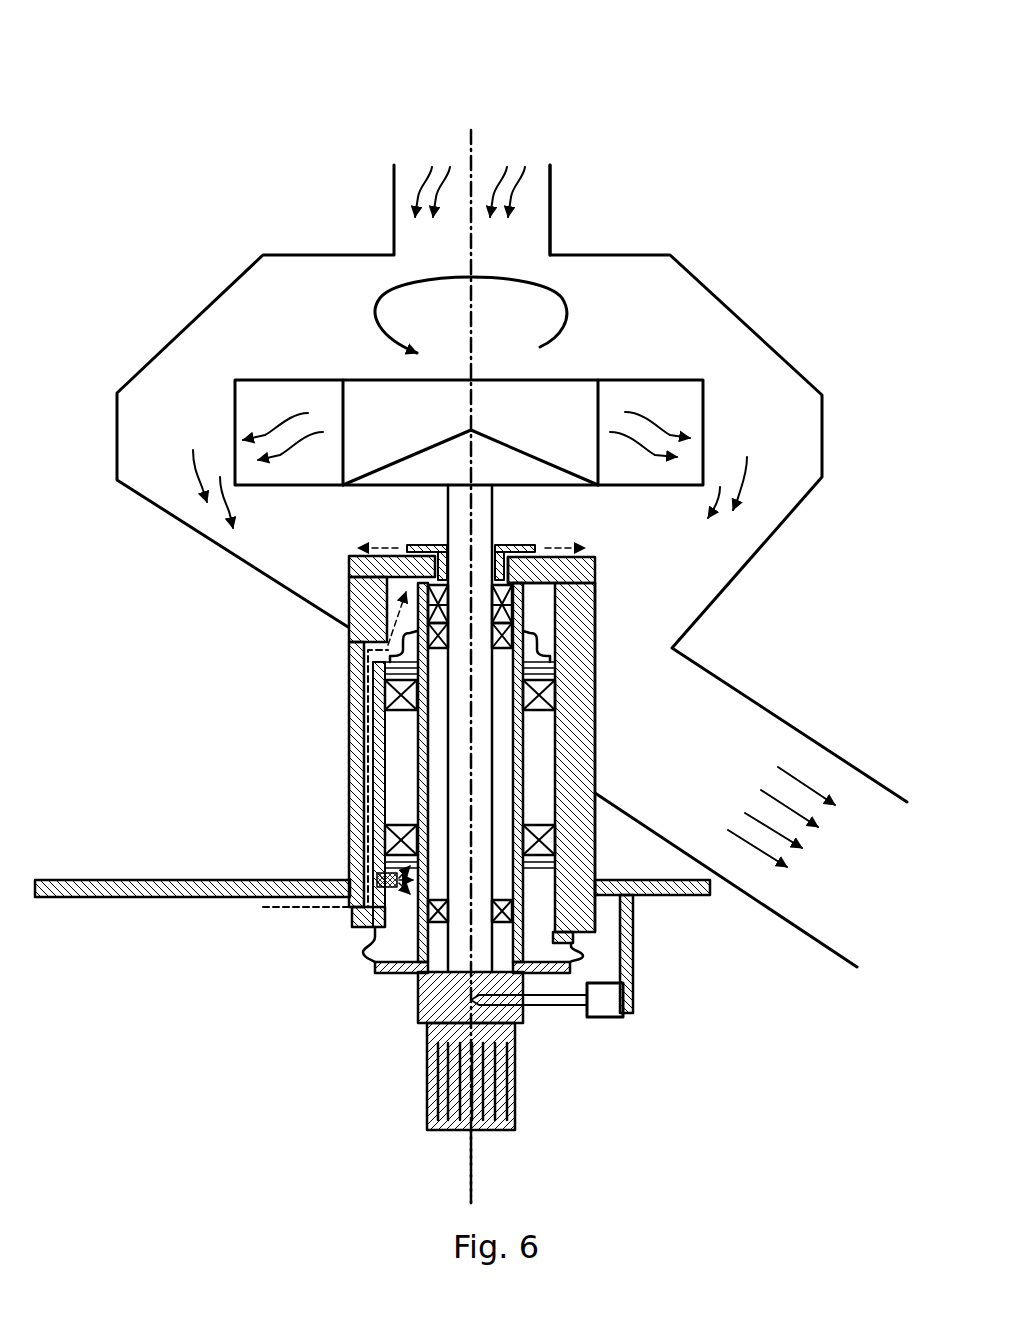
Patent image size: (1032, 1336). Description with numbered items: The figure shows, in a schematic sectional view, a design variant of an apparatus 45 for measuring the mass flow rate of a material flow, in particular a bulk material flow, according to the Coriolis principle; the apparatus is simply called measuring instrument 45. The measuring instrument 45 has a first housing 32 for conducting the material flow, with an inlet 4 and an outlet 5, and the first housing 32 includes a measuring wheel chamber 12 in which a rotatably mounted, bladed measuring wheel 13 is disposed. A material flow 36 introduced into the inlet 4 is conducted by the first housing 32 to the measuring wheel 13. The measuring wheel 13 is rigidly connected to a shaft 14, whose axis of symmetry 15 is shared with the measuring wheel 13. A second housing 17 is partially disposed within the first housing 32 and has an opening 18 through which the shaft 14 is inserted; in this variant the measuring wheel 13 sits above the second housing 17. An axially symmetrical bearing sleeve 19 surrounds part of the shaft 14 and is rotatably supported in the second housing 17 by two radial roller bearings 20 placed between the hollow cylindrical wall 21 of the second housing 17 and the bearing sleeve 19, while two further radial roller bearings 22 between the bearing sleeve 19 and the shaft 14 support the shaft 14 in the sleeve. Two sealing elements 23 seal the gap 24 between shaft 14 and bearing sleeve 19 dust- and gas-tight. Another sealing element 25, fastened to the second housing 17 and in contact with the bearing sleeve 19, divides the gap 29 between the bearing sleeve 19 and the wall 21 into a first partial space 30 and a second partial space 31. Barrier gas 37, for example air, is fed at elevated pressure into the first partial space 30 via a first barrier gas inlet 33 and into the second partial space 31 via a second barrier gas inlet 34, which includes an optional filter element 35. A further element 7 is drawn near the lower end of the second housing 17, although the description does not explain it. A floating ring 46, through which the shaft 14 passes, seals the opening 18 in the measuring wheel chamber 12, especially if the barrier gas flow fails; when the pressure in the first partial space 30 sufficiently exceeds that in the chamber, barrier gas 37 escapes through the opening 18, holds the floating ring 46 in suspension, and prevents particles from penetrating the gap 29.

The apparatus for measuring a mass flow rate 45 is at (511, 483).
The inlet 4 is at (550, 187).
The material flow 36 is at (430, 180).
The first housing 32 is at (217, 298).
The measuring wheel chamber 12 is at (685, 296).
The measuring wheel 13 is at (572, 378).
The floating ring 46 is at (430, 545).
The first partial space 30 is at (400, 583).
The opening 18 is at (502, 560).
The sealing elements 23 is at (545, 598).
The sealing element 25 is at (545, 655).
The first barrier gas inlet 33 is at (382, 614).
The wall 21 is at (365, 705).
The second housing 17 is at (350, 720).
The shaft 14 is at (560, 728).
The bearings 22 is at (442, 650).
The bearing sleeve 19 is at (565, 757).
The gap 29 is at (560, 793).
The bearings 20 is at (388, 832).
The outlet 5 is at (755, 697).
The second barrier gas inlet 34 is at (378, 878).
The second partial space 31 is at (600, 918).
The barrier gas 37 is at (265, 912).
The filter element 35 is at (402, 925).
The gap 24 is at (495, 968).
The sensor 7 is at (573, 1018).
The axis of symmetry 15 is at (559, 671).